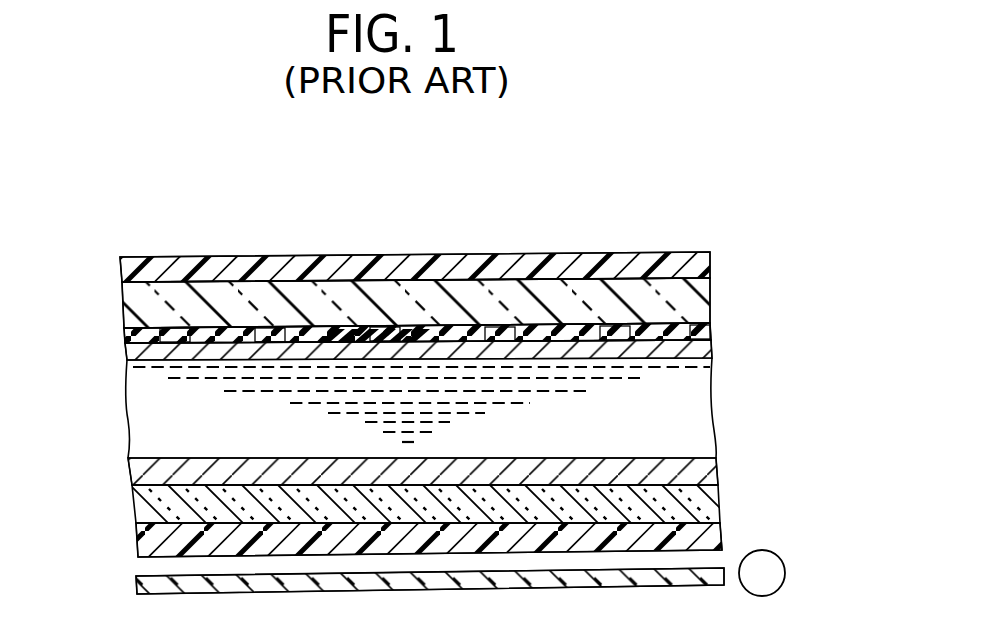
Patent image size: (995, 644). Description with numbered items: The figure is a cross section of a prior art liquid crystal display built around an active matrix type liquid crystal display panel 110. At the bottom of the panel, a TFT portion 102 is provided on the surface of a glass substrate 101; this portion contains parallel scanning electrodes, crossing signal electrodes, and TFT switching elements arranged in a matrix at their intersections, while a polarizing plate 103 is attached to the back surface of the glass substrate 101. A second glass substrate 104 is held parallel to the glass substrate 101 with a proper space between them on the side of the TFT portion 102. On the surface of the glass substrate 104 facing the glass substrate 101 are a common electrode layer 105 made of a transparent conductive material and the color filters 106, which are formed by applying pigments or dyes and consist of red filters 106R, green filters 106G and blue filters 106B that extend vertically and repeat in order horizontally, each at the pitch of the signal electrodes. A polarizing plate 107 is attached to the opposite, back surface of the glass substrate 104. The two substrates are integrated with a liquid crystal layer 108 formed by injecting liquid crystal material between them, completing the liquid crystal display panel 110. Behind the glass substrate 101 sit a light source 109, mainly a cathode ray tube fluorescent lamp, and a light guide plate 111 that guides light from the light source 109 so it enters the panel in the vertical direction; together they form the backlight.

The liquid crystal display panel 110 is at (722, 228).
The polarizing plate 107 is at (120, 272).
The glass substrate 104 is at (140, 308).
The color filters 106 is at (741, 333).
The red filters 106R is at (172, 332).
The green filters 106G is at (268, 334).
The blue filters 106B is at (385, 334).
The common electrode layer 105 is at (135, 358).
The liquid crystal layer 108 is at (688, 405).
The TFT portion 102 is at (130, 470).
The glass substrate 101 is at (135, 515).
The polarizing plate 103 is at (138, 546).
The light guide plate 111 is at (135, 588).
The light source 109 is at (765, 573).